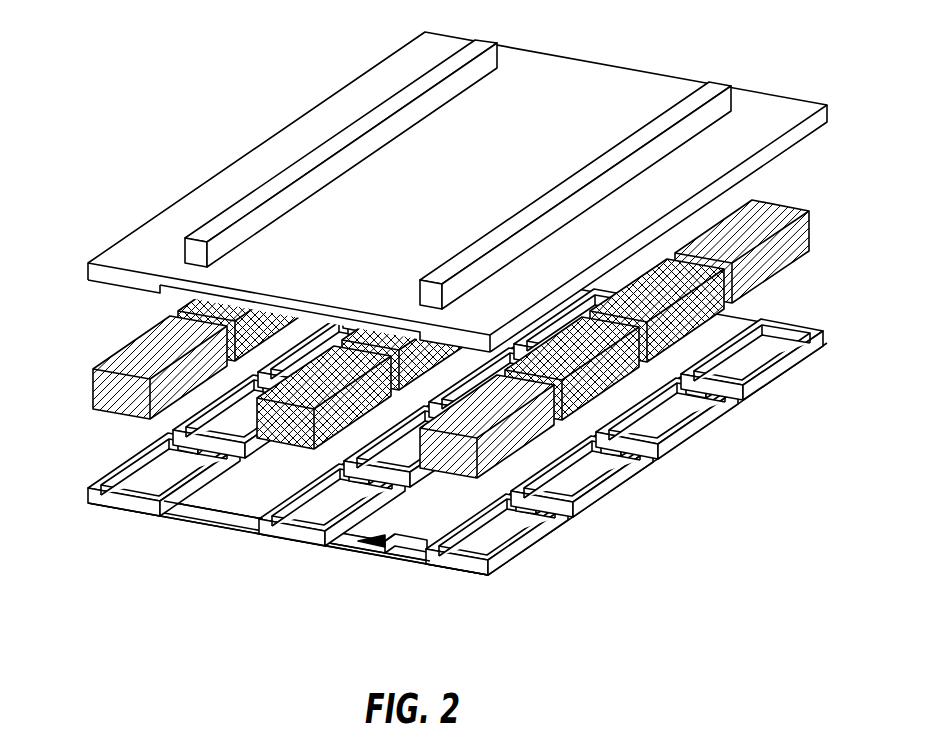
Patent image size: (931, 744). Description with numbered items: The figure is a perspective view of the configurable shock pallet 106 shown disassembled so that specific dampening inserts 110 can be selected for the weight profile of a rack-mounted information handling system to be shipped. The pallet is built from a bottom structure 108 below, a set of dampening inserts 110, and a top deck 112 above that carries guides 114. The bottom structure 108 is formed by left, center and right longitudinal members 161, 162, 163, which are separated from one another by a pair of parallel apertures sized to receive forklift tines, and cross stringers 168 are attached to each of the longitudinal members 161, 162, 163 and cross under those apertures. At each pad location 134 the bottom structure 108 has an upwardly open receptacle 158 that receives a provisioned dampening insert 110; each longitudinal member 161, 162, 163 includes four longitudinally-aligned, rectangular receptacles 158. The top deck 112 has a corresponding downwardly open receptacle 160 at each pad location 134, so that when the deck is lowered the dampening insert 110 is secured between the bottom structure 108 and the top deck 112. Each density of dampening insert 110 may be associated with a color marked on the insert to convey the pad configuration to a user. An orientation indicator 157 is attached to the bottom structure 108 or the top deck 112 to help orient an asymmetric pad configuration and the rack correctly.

The configurable shock pallet 106 is at (158, 52).
The bottom structure 108 is at (421, 463).
The dampening inserts 110 is at (93, 397).
The top deck 112 is at (432, 191).
The guides 114 is at (357, 115).
The pad location 134 is at (155, 535).
The orientation indicator 157 is at (376, 550).
The upwardly open receptacle 158 is at (130, 478).
The downwardly open receptacle 160 is at (132, 292).
The left longitudinal member 161 is at (113, 505).
The center longitudinal member 162 is at (290, 535).
The right longitudinal member 163 is at (455, 400).
The cross stringers 168 is at (387, 400).